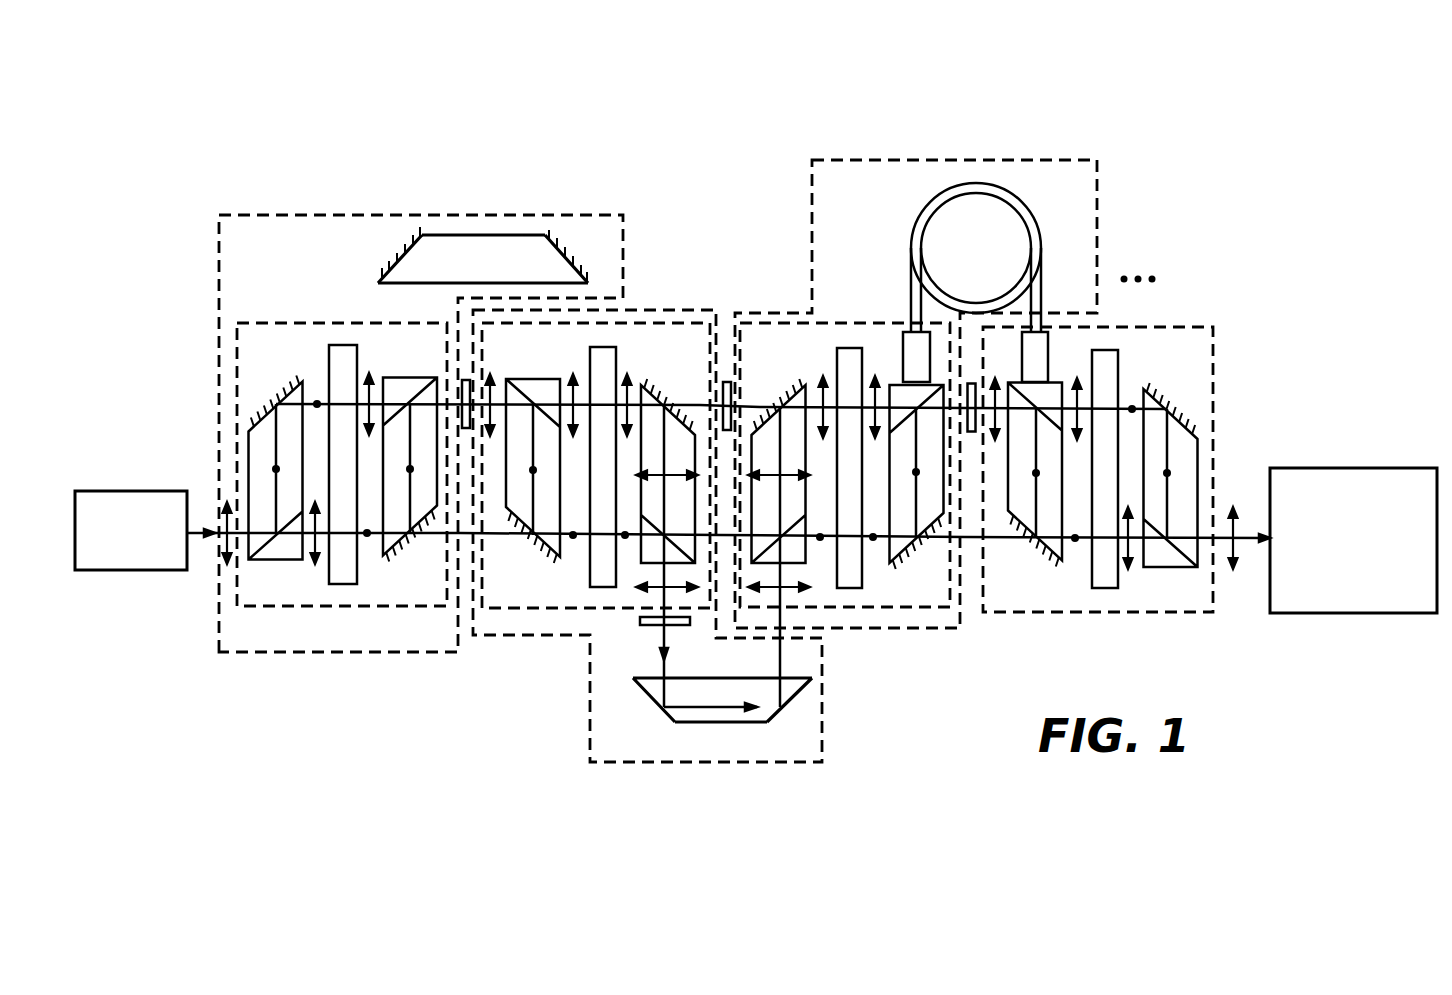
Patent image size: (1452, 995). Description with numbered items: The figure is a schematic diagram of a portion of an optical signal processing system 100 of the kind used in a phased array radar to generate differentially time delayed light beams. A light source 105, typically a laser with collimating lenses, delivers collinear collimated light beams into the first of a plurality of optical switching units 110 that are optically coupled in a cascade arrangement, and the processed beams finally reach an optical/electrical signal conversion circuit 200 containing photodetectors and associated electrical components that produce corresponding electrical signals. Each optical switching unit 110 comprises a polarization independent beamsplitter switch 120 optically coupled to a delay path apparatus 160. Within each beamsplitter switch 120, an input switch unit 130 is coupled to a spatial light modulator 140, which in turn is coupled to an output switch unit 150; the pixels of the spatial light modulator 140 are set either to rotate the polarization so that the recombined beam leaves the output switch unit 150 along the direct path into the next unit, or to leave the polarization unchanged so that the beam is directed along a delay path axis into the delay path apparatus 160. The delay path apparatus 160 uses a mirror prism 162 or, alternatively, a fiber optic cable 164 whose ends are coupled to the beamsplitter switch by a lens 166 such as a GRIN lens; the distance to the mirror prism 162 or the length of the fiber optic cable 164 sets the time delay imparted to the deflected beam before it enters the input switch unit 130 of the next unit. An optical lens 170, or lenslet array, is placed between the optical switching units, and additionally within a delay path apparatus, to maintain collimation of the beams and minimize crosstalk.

The optical signal processing system 100 is at (205, 198).
The light source 105 is at (120, 490).
The optical switching unit 110 is at (566, 694).
The polarization independent beamsplitter switch 120 is at (1243, 376).
The input switch unit 130 is at (246, 456).
The spatial light modulator 140 is at (328, 373).
The output switch unit 150 is at (407, 377).
The delay path apparatus 160 is at (695, 718).
The mirror prism 162 is at (388, 272).
The fiber optic cable 164 is at (912, 258).
The lens 166 is at (905, 331).
The optical lens 170 is at (727, 382).
The optical/electrical signal conversion circuit 200 is at (1340, 467).